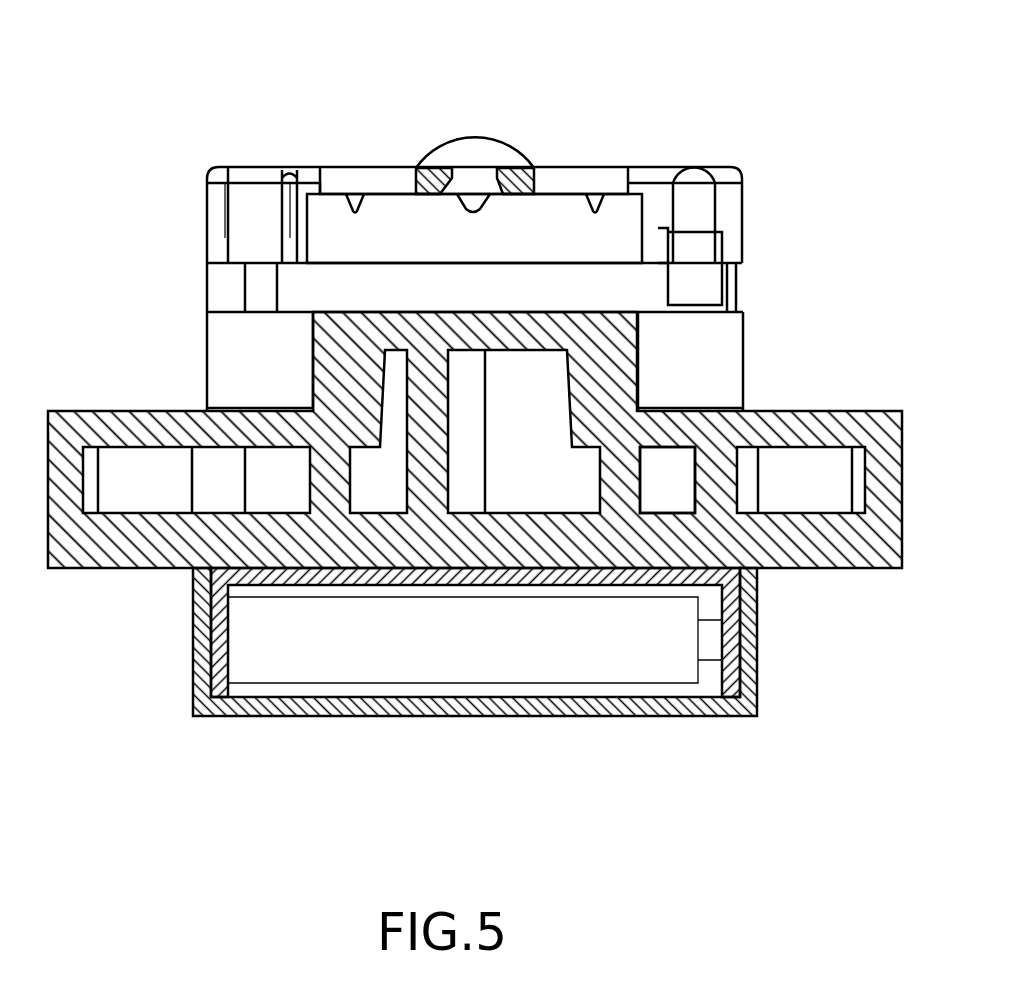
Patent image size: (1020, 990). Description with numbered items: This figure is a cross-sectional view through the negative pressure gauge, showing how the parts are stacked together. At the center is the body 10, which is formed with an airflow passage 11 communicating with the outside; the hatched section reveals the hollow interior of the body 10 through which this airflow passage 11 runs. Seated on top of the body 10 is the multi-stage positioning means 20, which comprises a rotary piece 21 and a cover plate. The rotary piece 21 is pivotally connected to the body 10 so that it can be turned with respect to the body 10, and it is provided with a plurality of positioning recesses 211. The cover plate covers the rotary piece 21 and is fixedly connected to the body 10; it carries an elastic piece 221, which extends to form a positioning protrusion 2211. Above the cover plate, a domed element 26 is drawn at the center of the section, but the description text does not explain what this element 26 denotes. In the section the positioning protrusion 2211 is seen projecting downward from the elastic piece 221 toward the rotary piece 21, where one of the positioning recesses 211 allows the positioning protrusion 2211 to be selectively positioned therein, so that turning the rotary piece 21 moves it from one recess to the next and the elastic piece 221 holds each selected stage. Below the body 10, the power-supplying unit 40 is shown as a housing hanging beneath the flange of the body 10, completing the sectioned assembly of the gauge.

The body 10 is at (818, 412).
The airflow passage 11 is at (677, 473).
The multi-stage positioning means 20 is at (735, 165).
The rotary piece 21 is at (600, 178).
The positioning recesses 211 is at (462, 196).
The elastic piece 221 is at (550, 176).
The positioning protrusion 2211 is at (474, 192).
The screw head 26 is at (497, 148).
The power-supplying unit 40 is at (617, 707).